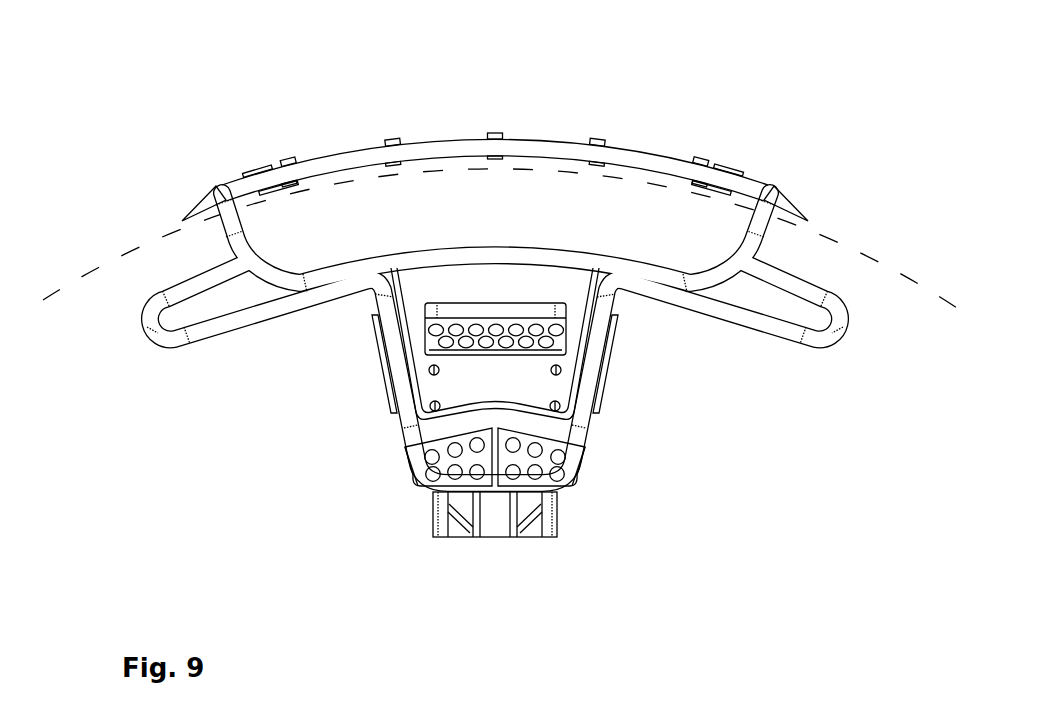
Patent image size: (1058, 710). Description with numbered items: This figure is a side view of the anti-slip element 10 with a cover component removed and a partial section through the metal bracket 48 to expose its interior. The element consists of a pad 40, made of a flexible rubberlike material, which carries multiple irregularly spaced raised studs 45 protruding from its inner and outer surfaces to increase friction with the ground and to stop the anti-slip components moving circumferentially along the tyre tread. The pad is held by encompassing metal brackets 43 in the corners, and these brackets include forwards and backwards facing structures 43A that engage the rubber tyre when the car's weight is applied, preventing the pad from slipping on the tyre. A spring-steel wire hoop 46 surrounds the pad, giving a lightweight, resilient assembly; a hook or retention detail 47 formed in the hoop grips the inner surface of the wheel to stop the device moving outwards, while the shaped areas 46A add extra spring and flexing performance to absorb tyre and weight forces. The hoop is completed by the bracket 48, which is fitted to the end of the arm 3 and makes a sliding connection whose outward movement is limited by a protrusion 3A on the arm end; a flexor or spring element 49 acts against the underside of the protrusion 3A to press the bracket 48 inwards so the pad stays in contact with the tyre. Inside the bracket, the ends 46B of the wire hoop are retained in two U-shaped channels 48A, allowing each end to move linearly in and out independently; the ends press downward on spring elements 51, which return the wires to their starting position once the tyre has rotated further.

The anti-slip element 10 is at (472, 294).
The pad 40 is at (542, 147).
The raised studs 45 is at (393, 140).
The hook/retention detail 47 is at (685, 157).
The metal brackets 43 is at (766, 185).
The forwards and backwards facing structure 43A is at (803, 217).
The wire hoop 46 is at (200, 283).
The hoop flexing areas 46A is at (153, 323).
The wire hoop ends 46B is at (410, 408).
The bracket 48 is at (385, 370).
The U-shaped channels 48A is at (383, 333).
The flexor or spring element 49 is at (444, 329).
The protrusion 3A is at (485, 278).
The spring elements 51 is at (422, 463).
The arms 3 is at (537, 530).